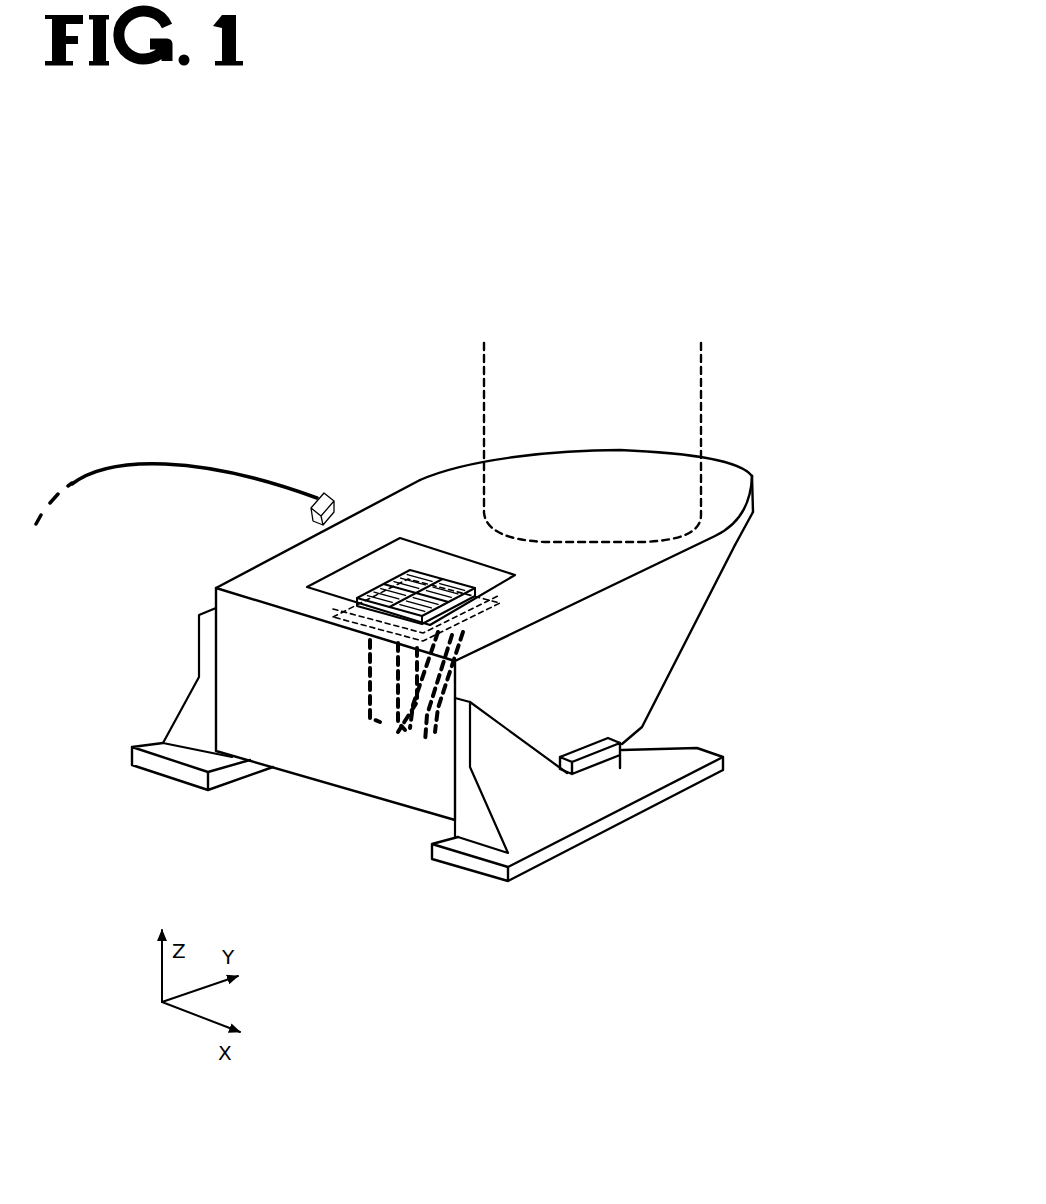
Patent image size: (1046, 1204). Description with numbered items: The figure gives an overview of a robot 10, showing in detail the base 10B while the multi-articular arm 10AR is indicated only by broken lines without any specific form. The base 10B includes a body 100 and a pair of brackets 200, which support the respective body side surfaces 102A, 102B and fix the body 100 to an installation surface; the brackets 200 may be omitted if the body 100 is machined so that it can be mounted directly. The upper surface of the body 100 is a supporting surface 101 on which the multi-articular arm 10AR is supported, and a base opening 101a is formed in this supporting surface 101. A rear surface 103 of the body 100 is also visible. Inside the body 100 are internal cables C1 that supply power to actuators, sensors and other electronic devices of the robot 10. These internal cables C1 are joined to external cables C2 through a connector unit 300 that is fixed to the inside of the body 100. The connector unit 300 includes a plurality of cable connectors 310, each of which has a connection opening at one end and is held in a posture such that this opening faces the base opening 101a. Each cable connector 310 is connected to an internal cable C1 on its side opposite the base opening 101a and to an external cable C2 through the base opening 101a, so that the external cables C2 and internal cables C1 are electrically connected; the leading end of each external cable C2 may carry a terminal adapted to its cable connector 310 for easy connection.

The robot 10 is at (370, 283).
The multi-articular arm 10AR is at (483, 372).
The base 10B is at (362, 476).
The body 100 is at (752, 478).
The supporting surface 101 is at (713, 497).
The base opening 101a is at (426, 540).
The body side surface 102A is at (608, 667).
The body side surface 102B is at (199, 604).
The rear surface 103 is at (436, 786).
The brackets 200 is at (152, 747).
The connector unit 300 is at (467, 581).
The cable connectors 310 is at (408, 570).
The internal cables C1 is at (403, 742).
The external cables C2 is at (167, 462).